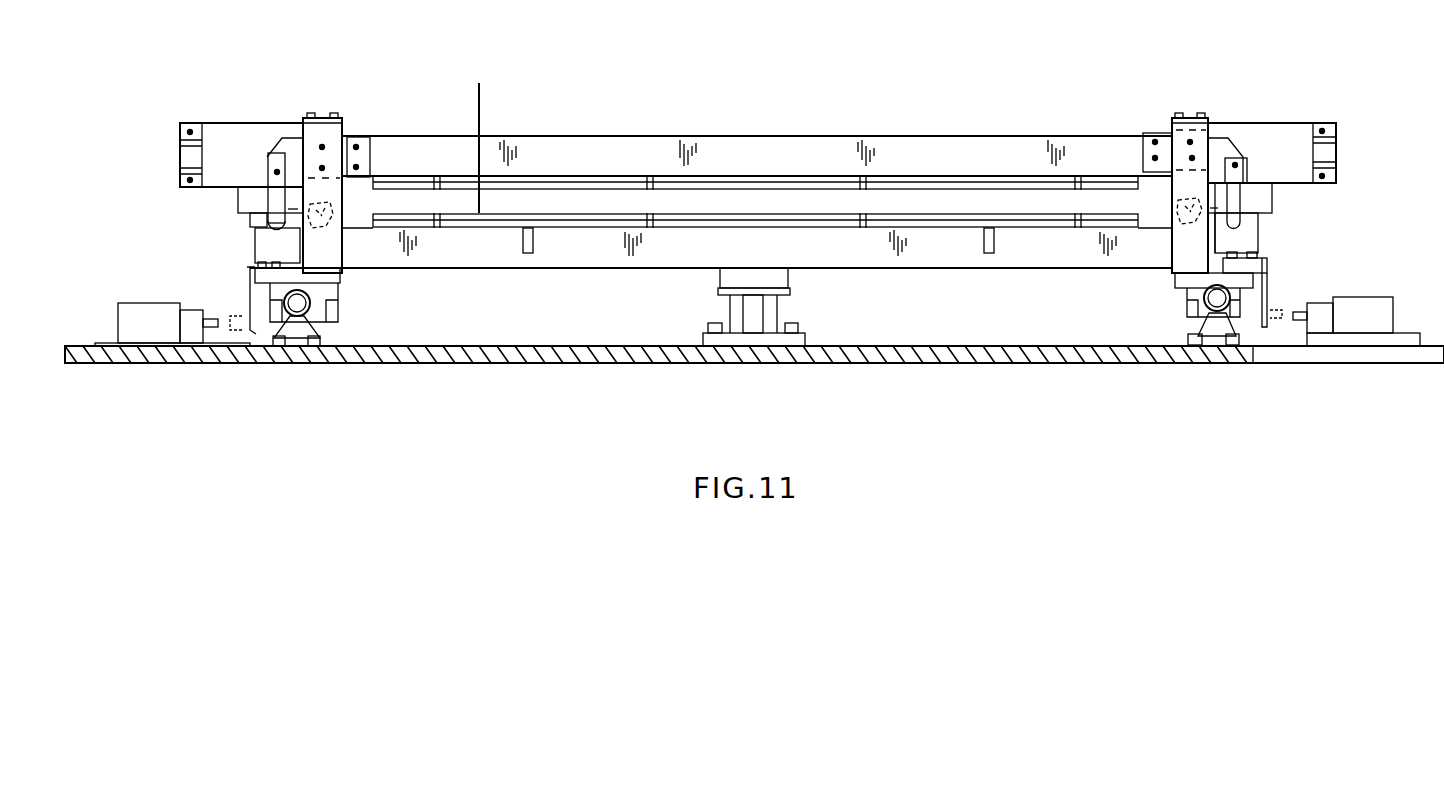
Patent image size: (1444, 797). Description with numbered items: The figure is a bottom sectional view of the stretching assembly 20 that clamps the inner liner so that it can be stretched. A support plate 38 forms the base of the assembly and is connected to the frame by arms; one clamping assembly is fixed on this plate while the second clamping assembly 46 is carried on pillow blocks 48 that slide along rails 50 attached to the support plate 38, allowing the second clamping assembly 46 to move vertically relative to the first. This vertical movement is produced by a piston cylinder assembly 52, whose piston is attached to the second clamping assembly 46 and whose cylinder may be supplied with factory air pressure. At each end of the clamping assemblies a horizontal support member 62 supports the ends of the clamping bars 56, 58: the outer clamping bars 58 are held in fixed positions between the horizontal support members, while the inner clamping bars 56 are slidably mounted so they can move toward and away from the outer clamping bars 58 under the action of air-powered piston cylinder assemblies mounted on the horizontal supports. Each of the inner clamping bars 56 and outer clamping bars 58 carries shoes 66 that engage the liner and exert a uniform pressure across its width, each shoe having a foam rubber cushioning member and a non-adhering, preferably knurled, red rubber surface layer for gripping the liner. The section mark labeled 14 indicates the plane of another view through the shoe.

The section line 14- 14 is at (493, 87).
The stretching assembly 20 is at (1200, 98).
The support plate 38 is at (993, 364).
The second clamping assembly 46 is at (1203, 147).
The pillow blocks 48 is at (318, 308).
The rails 50 is at (303, 330).
The piston cylinder assembly 52 is at (772, 310).
The inner clamping bars 56 is at (586, 152).
The outer clamping bars 58 is at (587, 243).
The horizontal support member 62 is at (328, 160).
The shoes 66 is at (718, 177).